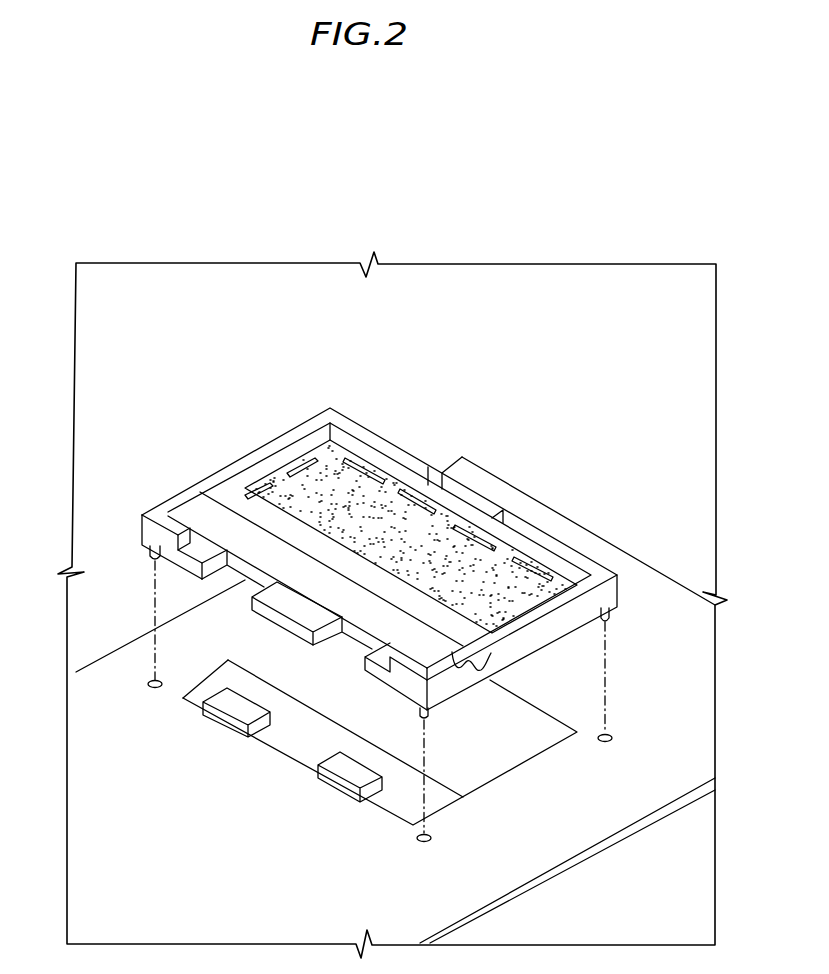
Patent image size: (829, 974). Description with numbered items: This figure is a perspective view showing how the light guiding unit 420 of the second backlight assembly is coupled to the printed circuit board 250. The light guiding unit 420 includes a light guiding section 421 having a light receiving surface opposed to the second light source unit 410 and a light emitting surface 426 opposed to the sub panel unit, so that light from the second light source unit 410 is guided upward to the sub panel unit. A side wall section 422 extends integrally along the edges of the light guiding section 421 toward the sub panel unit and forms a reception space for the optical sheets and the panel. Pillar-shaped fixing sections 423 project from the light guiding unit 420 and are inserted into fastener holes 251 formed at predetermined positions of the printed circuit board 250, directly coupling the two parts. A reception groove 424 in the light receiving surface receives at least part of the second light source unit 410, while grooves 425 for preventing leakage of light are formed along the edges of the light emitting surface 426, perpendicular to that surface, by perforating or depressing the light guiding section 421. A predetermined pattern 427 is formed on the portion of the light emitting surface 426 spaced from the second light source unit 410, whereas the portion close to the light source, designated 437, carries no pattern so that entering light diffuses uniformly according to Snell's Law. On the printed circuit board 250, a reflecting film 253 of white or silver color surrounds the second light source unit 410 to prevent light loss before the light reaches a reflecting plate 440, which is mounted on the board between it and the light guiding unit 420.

The light guiding unit 420 is at (258, 403).
The light guiding section 421 is at (263, 518).
The side wall section 422 is at (362, 435).
The fixing section 423 is at (430, 714).
The reception groove 424 is at (360, 632).
The groove for preventing leakage of light 425 is at (467, 533).
The light emitting surface 426 is at (480, 577).
The pattern 427 is at (337, 478).
The portion on which the pattern is not formed 437 is at (488, 668).
The reflecting plate 440 is at (287, 672).
The reflecting film 253 is at (273, 748).
The second light source unit 410 is at (350, 773).
The printed circuit board 250 is at (562, 888).
The fastener hole 251 is at (431, 836).